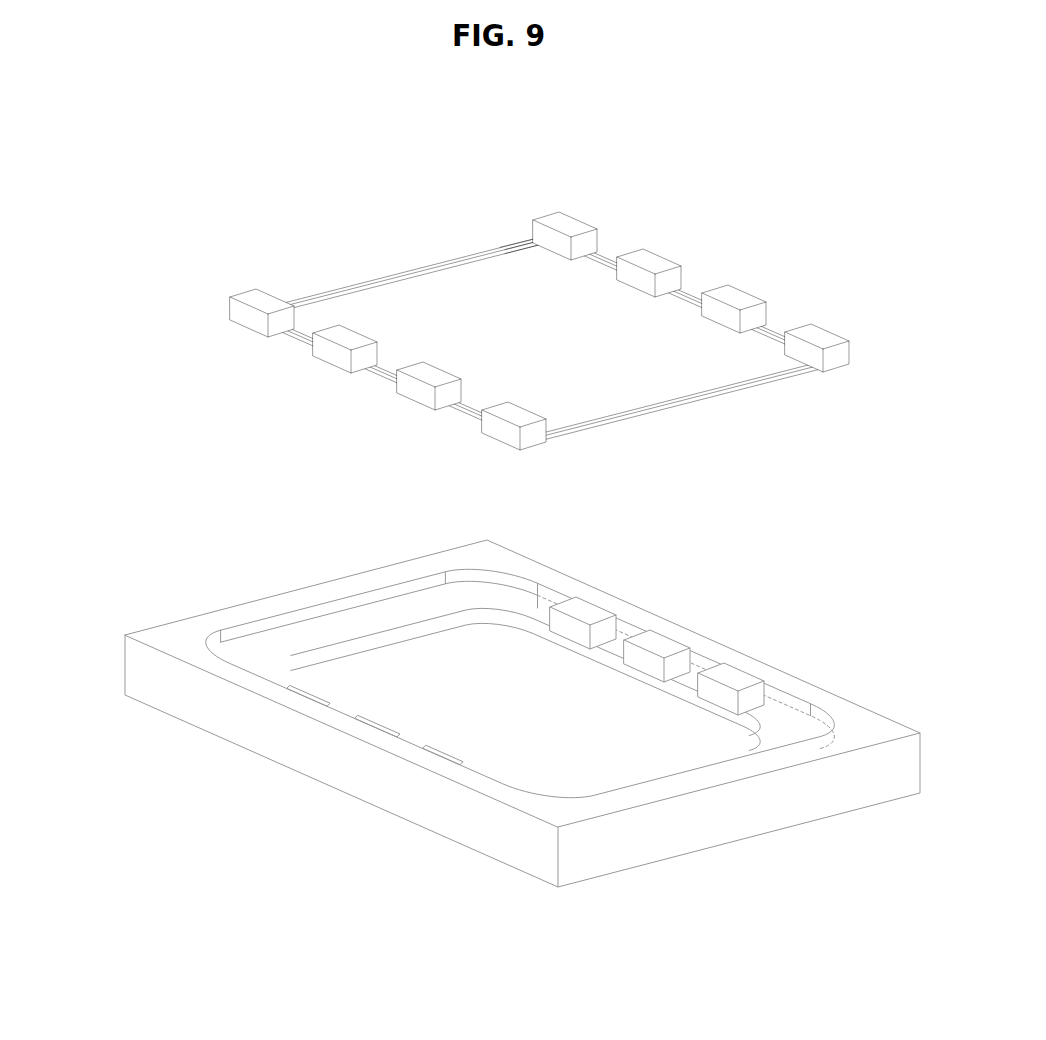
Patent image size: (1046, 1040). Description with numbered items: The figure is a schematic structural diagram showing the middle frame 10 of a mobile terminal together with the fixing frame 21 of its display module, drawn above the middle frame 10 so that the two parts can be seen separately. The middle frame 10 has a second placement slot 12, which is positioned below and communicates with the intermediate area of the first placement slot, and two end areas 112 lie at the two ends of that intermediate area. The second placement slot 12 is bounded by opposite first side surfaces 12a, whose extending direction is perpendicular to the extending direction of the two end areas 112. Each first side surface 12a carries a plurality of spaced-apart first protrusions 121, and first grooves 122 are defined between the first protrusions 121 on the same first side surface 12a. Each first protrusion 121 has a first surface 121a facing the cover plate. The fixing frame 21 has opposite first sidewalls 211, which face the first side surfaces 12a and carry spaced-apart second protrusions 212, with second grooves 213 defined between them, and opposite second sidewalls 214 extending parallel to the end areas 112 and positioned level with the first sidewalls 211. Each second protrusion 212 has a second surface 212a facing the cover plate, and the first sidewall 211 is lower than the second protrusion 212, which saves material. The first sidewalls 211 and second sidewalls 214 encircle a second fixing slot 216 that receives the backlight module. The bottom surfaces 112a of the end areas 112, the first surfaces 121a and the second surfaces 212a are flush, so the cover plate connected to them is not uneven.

The fixing frame 21 is at (463, 294).
The first sidewall 211 is at (472, 400).
The second protrusion 212 is at (264, 297).
The second surface 212a is at (648, 238).
The second groove 213 is at (697, 266).
The second sidewall 214 is at (397, 262).
The second fixing slot 216 is at (527, 238).
The middle frame 10 is at (499, 693).
The second placement slot 12 is at (560, 622).
The first side surface 12a is at (781, 708).
The end area 112 is at (480, 570).
The bottom surface 112a is at (352, 600).
The first protrusion 121 is at (728, 680).
The first surface 121a is at (662, 618).
The first groove 122 is at (703, 650).